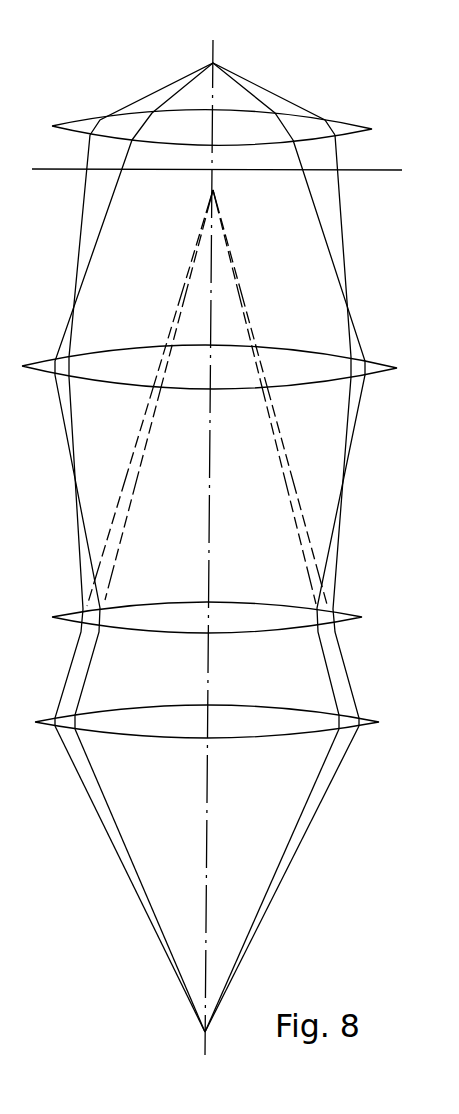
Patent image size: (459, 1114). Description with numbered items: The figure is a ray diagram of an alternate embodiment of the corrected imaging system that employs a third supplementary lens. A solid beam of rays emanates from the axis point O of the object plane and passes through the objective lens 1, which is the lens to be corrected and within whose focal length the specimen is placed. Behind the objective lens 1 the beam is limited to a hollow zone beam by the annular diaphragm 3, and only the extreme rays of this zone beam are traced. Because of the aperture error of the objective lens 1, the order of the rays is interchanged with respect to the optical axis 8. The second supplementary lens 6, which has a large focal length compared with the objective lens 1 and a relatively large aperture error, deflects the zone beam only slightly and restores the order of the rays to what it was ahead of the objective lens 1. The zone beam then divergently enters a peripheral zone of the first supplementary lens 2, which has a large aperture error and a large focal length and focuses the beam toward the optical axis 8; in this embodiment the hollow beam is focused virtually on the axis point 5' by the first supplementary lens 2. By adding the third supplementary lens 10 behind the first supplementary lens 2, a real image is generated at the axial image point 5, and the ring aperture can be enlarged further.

The axis point of the object plane O is at (213, 63).
The objective lens 1 is at (360, 127).
The annular diaphragm 3 is at (376, 169).
The axis point of virtual focus 5' is at (207, 393).
The second supplementary lens 6 is at (311, 368).
The optical axis 8 is at (208, 551).
The first supplementary lens 2 is at (342, 612).
The third supplementary lens 10 is at (257, 718).
The image point 5 is at (207, 901).